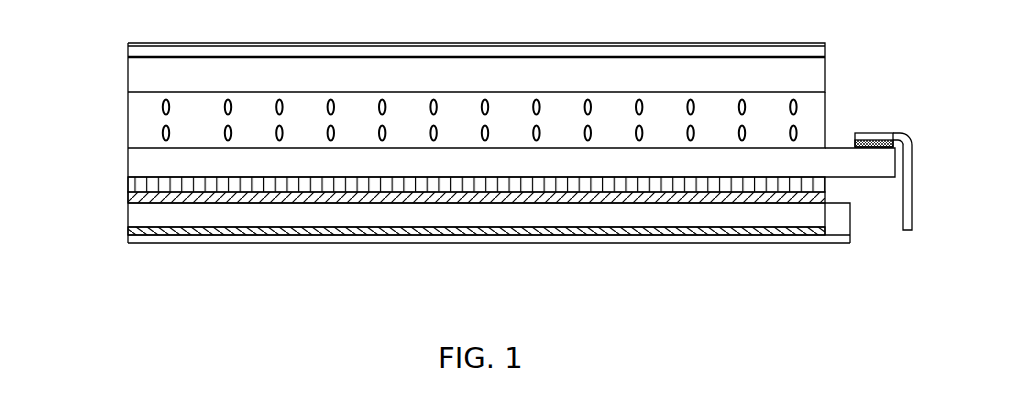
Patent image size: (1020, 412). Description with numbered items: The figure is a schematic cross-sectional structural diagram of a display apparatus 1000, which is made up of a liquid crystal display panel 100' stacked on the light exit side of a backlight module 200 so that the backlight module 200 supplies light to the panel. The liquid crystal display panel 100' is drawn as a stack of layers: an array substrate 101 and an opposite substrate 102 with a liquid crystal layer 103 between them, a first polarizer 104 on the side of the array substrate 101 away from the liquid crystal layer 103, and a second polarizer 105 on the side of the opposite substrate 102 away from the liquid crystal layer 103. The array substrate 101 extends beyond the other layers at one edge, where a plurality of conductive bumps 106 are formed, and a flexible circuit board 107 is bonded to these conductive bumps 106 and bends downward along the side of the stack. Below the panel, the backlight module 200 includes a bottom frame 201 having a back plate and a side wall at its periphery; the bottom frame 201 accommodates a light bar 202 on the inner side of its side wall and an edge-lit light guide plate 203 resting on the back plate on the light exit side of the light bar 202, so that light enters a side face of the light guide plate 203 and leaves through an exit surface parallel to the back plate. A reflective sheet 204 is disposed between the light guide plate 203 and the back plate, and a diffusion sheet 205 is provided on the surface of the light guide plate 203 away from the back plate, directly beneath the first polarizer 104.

The display apparatus 1000 is at (70, 22).
The liquid crystal display panel 100' is at (465, 141).
The second polarizer 105 is at (155, 52).
The opposite substrate 102 is at (155, 68).
The liquid crystal layer 103 is at (150, 118).
The array substrate 101 is at (150, 163).
The first polarizer 104 is at (155, 186).
The conductive bumps 106 is at (862, 140).
The flexible circuit board 107 is at (893, 138).
The backlight module 200 is at (847, 283).
The bottom frame 201 is at (655, 238).
The light bar 202 is at (835, 223).
The light guide plate 203 is at (738, 212).
The reflective sheet 204 is at (688, 230).
The diffusion sheet 205 is at (777, 194).